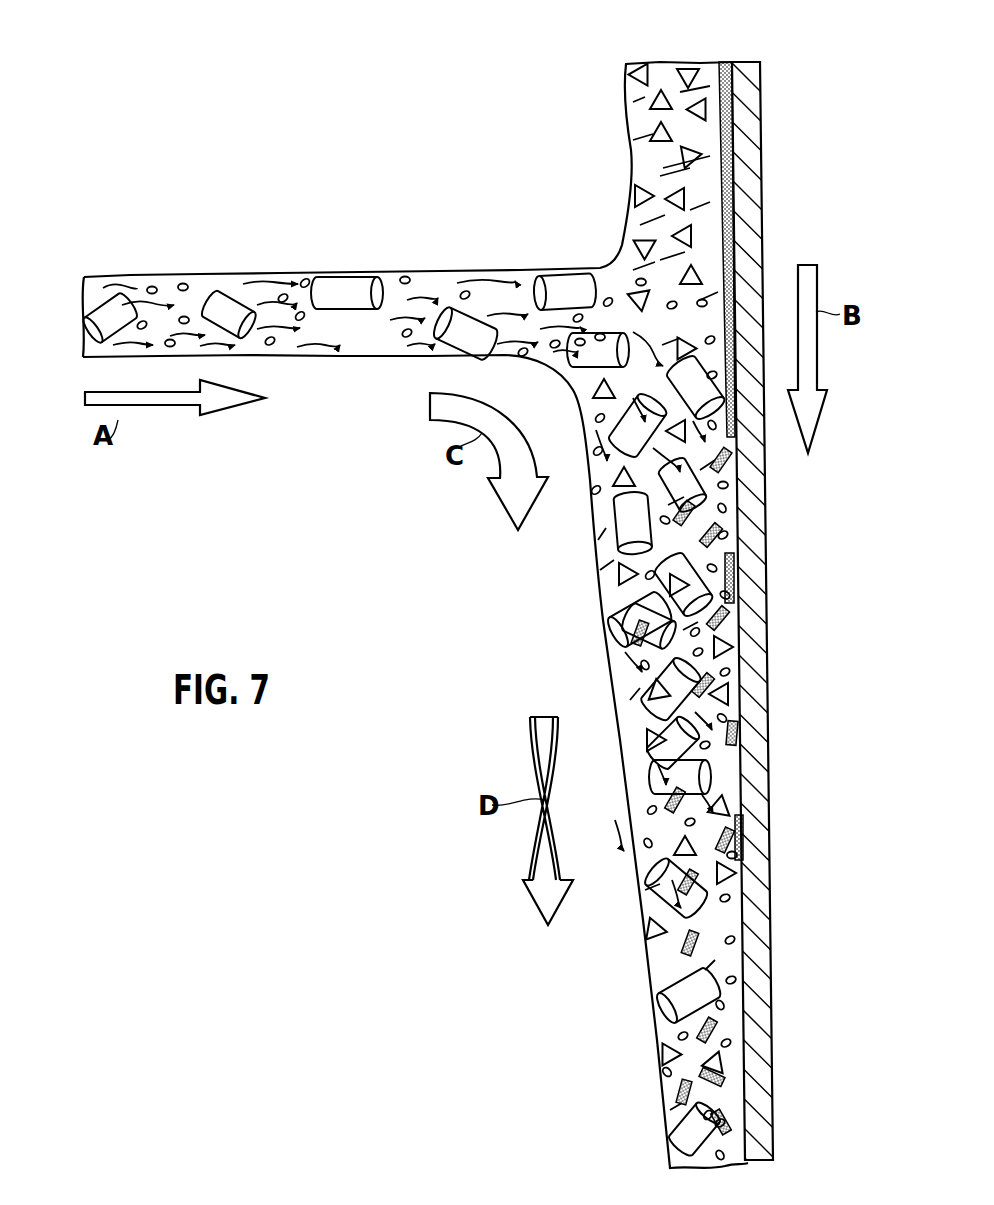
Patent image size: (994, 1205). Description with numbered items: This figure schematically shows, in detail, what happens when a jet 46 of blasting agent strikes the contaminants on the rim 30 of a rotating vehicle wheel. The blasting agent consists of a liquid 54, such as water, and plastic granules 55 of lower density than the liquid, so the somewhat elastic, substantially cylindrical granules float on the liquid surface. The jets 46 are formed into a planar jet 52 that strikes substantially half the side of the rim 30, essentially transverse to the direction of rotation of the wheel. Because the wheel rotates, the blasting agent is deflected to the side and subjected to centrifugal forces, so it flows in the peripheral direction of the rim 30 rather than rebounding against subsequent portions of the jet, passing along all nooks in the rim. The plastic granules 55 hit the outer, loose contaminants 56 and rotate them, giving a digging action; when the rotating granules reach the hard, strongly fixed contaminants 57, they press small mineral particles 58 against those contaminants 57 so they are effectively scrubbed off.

The rim 30 is at (755, 138).
The jet of blasting agent 46 is at (415, 615).
The planar jet 52 is at (288, 340).
The liquid 54 is at (458, 280).
The plastic granules 55 is at (340, 292).
The loose contaminants 56 is at (657, 64).
The hard contaminants 57 is at (735, 58).
The mineral particles 58 is at (406, 276).